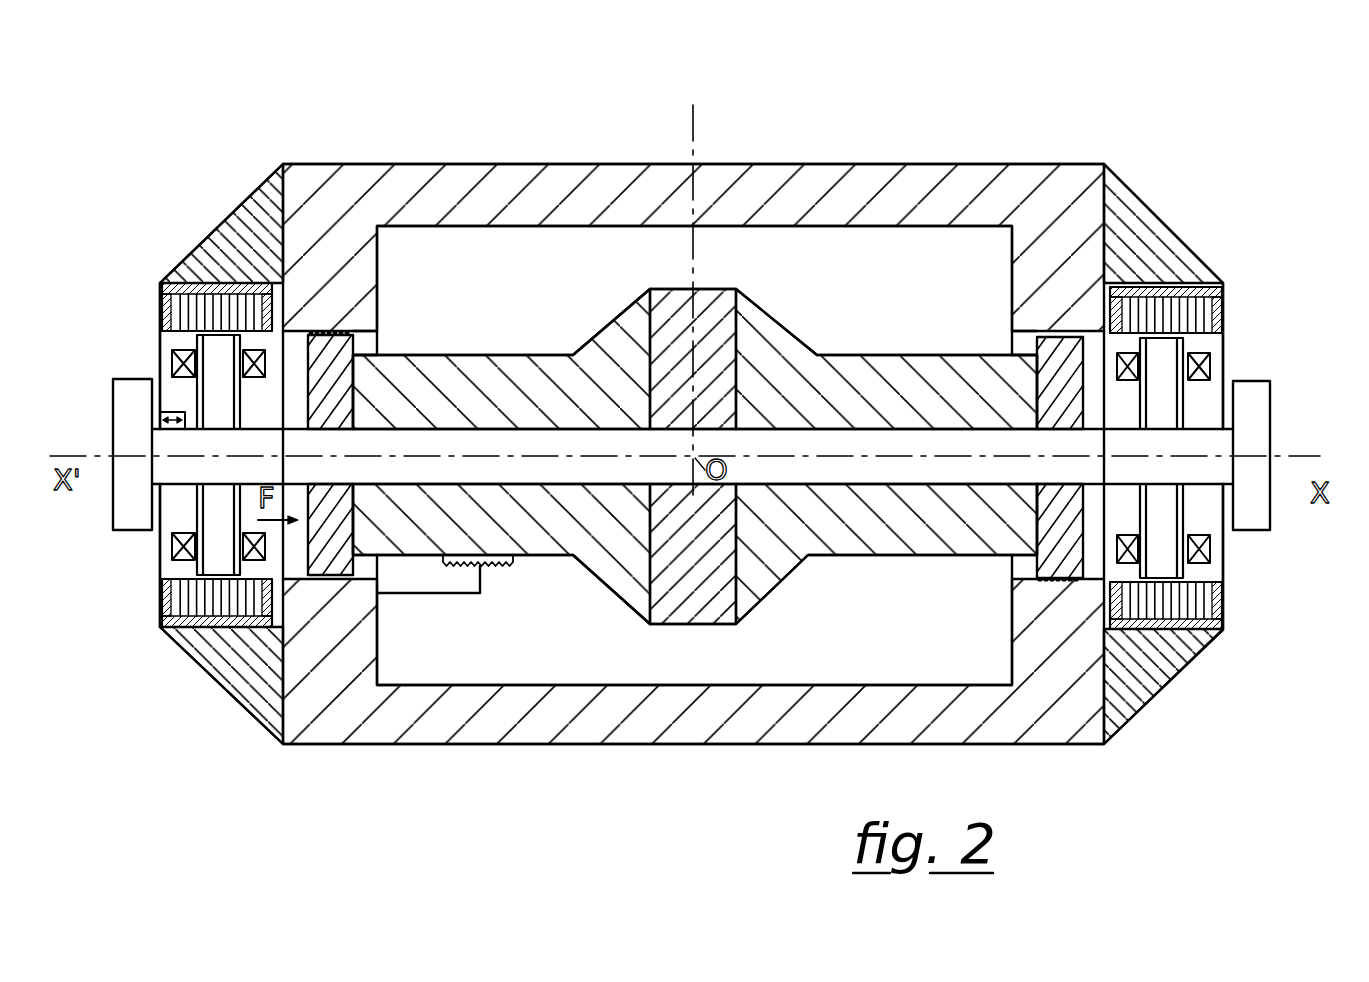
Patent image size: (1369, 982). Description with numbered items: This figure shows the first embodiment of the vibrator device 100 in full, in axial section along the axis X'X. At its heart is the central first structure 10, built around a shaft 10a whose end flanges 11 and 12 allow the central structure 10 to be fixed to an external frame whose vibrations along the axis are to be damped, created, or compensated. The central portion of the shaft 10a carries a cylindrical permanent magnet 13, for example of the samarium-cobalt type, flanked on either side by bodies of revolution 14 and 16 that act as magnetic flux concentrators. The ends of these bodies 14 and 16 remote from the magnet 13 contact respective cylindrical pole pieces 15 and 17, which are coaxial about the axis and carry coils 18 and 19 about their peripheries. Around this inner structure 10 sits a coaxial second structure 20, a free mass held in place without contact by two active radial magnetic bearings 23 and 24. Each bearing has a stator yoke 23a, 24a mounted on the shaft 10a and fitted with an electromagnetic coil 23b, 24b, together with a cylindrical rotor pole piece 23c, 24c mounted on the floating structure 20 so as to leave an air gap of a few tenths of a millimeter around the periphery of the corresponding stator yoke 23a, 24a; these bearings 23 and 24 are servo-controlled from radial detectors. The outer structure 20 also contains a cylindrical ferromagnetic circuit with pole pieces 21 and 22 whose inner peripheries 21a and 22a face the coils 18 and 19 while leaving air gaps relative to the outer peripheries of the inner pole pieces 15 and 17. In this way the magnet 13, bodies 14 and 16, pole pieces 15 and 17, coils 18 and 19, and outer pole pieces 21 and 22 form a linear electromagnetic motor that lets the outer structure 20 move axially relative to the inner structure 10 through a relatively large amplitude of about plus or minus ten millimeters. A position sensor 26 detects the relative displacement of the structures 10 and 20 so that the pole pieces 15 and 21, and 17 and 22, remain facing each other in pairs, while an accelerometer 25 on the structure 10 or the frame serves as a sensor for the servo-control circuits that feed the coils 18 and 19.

The vibrator device 100 is at (1017, 140).
The central first structure 10 is at (835, 565).
The shaft 10a is at (863, 470).
The end flange 11 is at (1250, 410).
The end flange 12 is at (132, 409).
The cylindrical permanent magnet 13 is at (692, 607).
The body of revolution 14 is at (532, 378).
The cylindrical pole piece 15 is at (333, 380).
The body of revolution 16 is at (867, 388).
The cylindrical pole piece 17 is at (1053, 362).
The coil 18 is at (325, 328).
The coil 19 is at (1043, 580).
The second structure 20 is at (562, 180).
The cylindrical pole piece 21 is at (358, 262).
The inner periphery 21a is at (377, 347).
The cylindrical pole piece 22 is at (1033, 272).
The inner periphery 22a is at (1102, 342).
The active radial magnetic bearing 23 is at (143, 290).
The stator yoke 23a is at (218, 355).
The electromagnetic coil 23b is at (252, 372).
The cylindrical rotor pole piece 23c is at (210, 307).
The active radial magnetic bearing 24 is at (1228, 352).
The stator yoke 24a is at (1182, 415).
The electromagnetic coil 24b is at (1208, 368).
The cylindrical rotor pole piece 24c is at (1200, 313).
The accelerometer 25 is at (160, 407).
The position sensor 26 is at (490, 579).